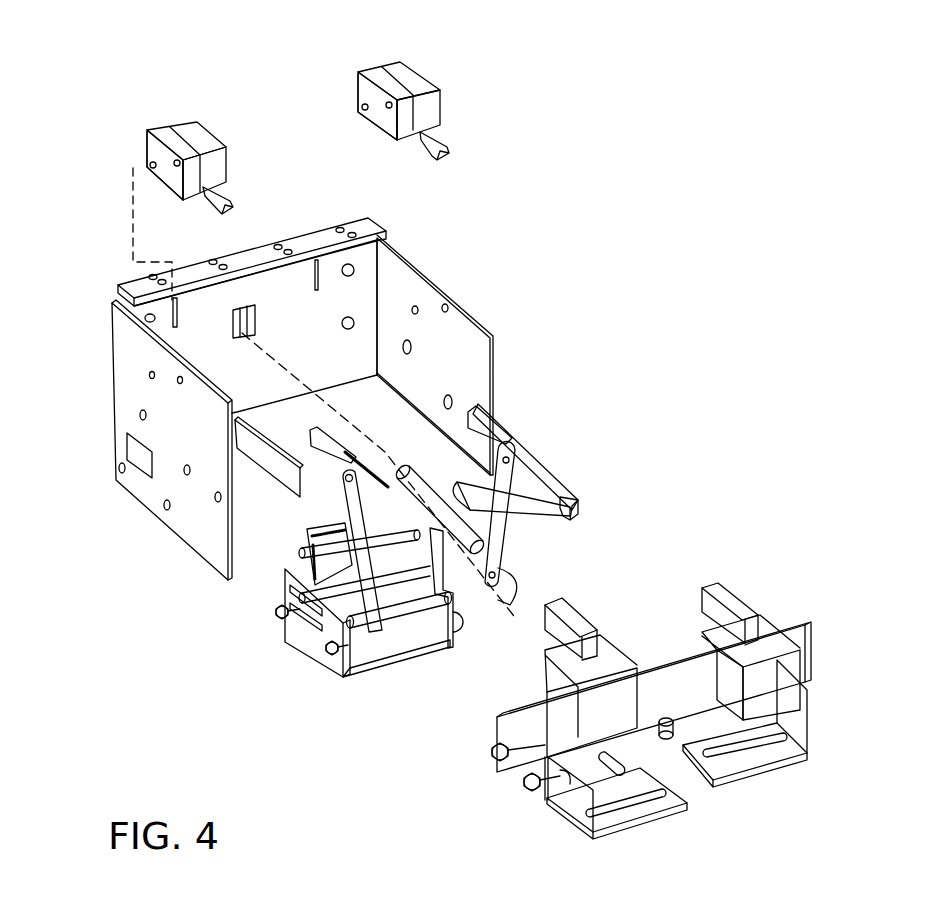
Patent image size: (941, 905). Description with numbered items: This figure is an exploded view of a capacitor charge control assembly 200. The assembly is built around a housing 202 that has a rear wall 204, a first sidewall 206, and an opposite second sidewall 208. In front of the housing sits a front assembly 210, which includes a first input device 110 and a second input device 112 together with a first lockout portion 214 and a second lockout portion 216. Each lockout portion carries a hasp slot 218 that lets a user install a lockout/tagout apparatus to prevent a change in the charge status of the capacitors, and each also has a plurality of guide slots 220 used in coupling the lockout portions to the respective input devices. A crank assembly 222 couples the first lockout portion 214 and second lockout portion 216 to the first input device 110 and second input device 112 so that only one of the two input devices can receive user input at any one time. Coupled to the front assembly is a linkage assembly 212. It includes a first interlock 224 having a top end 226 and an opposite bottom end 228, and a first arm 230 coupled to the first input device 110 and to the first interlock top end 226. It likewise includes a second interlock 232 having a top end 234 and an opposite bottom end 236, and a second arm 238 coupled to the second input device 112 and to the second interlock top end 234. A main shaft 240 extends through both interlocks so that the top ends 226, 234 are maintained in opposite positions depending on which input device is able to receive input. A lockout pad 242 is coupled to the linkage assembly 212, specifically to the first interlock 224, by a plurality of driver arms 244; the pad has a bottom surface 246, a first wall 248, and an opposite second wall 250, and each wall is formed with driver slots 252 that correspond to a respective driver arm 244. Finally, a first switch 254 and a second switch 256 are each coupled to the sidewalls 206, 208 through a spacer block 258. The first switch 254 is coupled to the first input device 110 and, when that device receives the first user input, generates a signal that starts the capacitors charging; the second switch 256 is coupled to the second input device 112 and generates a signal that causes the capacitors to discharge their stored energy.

The first input device 110 is at (618, 650).
The second input device 112 is at (775, 625).
The capacitor charge control assembly 200 is at (760, 158).
The housing 202 is at (112, 286).
The rear wall 204 is at (300, 235).
The first sidewall 206 is at (172, 533).
The second sidewall 208 is at (440, 290).
The front assembly 210 is at (840, 568).
The linkage assembly 212 is at (545, 447).
The first lockout portion 214 is at (590, 832).
The second lockout portion 216 is at (800, 770).
The hasp slot 218 is at (620, 807).
The guide slots 220 is at (565, 785).
The crank assembly 222 is at (683, 655).
The first interlock 224 is at (318, 525).
The top end 226 is at (340, 485).
The bottom end 228 is at (380, 612).
The first arm 230 is at (330, 443).
The second interlock 232 is at (450, 480).
The top end 234 is at (508, 440).
The bottom end 236 is at (510, 598).
The second arm 238 is at (565, 478).
The main shaft 240 is at (540, 513).
The lockout pad 242 is at (315, 705).
The driver arms 244 is at (282, 612).
The bottom surface 246 is at (368, 670).
The first wall 248 is at (300, 660).
The second wall 250 is at (462, 648).
The driver slots 252 is at (290, 590).
The first switch 254 is at (188, 123).
The second switch 256 is at (360, 70).
The spacer block 258 is at (158, 125).